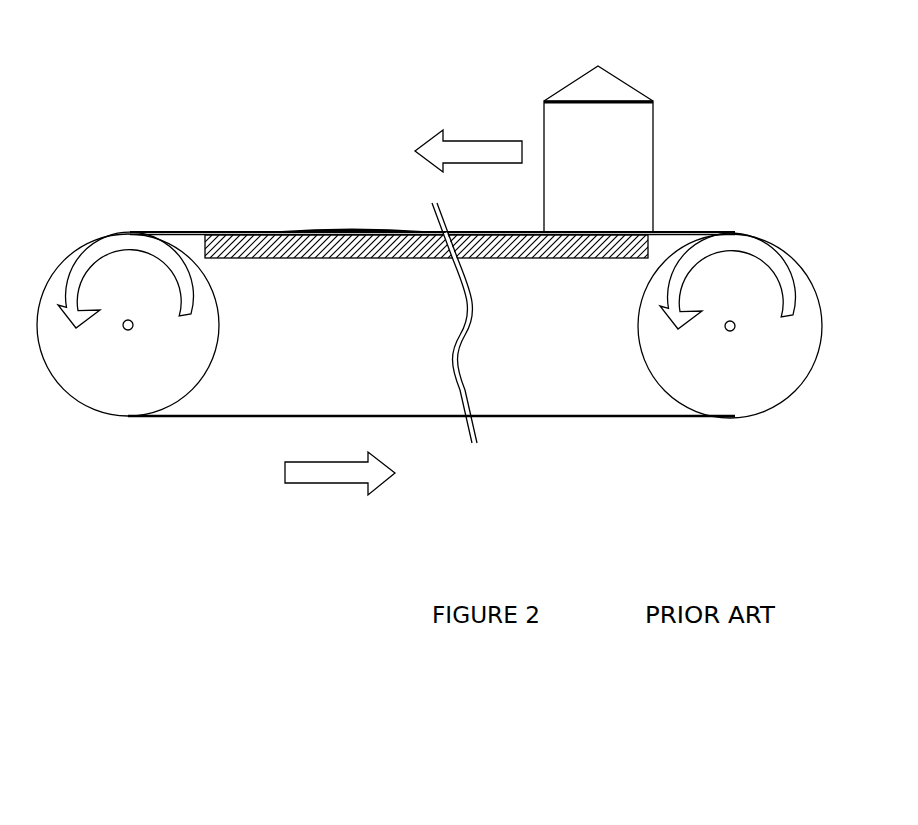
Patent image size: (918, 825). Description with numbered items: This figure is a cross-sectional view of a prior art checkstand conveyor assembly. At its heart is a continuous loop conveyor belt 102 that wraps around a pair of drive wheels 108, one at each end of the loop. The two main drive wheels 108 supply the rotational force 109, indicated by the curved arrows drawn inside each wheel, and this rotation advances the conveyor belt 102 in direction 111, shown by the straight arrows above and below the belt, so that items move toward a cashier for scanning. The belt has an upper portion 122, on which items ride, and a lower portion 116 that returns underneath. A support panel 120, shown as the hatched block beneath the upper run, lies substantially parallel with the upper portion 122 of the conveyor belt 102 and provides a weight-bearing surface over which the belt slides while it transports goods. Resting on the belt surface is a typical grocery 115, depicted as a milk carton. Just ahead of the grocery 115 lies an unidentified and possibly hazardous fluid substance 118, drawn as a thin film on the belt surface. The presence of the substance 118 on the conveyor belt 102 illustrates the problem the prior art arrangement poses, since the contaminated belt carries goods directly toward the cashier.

The conveyor belt 102 is at (673, 230).
The drive wheels 108 is at (112, 377).
The rotational force 109 is at (113, 268).
The direction 111 is at (480, 150).
The grocery 115 is at (633, 118).
The lower portion 116 is at (553, 418).
The fluid substance 118 is at (356, 216).
The support panel 120 is at (255, 242).
The upper portion 122 is at (200, 230).